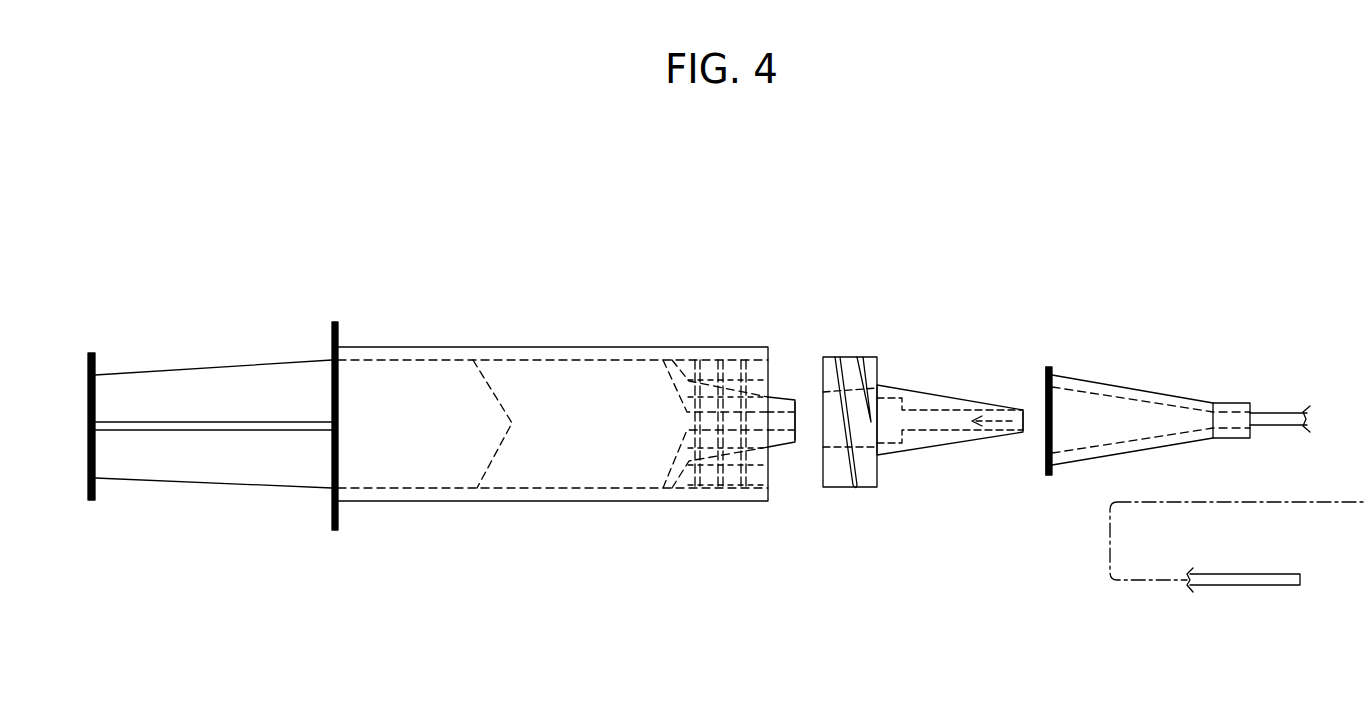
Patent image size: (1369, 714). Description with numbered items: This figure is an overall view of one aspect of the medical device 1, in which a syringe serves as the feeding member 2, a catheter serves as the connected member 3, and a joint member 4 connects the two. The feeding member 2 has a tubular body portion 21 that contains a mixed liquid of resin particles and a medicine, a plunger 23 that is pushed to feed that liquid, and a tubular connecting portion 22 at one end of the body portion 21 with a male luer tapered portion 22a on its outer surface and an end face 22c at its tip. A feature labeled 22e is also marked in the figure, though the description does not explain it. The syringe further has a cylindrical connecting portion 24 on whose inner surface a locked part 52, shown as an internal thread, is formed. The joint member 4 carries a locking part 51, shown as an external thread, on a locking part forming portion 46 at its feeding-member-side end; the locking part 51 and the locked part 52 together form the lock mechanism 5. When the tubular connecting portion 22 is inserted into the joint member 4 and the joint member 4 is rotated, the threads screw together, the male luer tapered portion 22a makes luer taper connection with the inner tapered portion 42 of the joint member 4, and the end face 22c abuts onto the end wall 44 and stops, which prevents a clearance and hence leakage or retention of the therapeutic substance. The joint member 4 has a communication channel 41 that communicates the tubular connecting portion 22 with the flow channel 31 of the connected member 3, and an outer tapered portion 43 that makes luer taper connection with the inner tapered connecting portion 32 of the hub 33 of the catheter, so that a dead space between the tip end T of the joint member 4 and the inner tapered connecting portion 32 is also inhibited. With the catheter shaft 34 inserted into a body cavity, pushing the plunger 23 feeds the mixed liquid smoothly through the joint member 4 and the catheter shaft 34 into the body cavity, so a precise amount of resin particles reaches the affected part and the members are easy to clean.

The medical device 1 is at (937, 237).
The feeding member 2 is at (450, 342).
The body portion 21 is at (398, 355).
The tubular connecting portion 22 is at (752, 360).
The male luer tapered portion 22a is at (782, 398).
The end face 22c is at (798, 408).
The flow path 22e is at (693, 422).
The plunger 23 is at (250, 473).
The cylindrical connecting portion 24 is at (663, 493).
The lock mechanism 5 is at (815, 588).
The locking part 51 is at (860, 487).
The locked part 52 is at (707, 490).
The joint member 4 is at (925, 383).
The communication channel 41 is at (1047, 440).
The inner tapered portion 42 is at (898, 390).
The outer tapered portion 43 is at (928, 450).
The end wall 44 is at (890, 452).
The locking part forming portion 46 is at (849, 357).
The connected member 3 is at (1147, 377).
The flow channel 31 is at (1240, 411).
The inner tapered connecting portion 32 is at (1070, 470).
The hub 33 is at (1105, 395).
The catheter shaft 34 is at (1298, 410).
The tip end T is at (1037, 440).